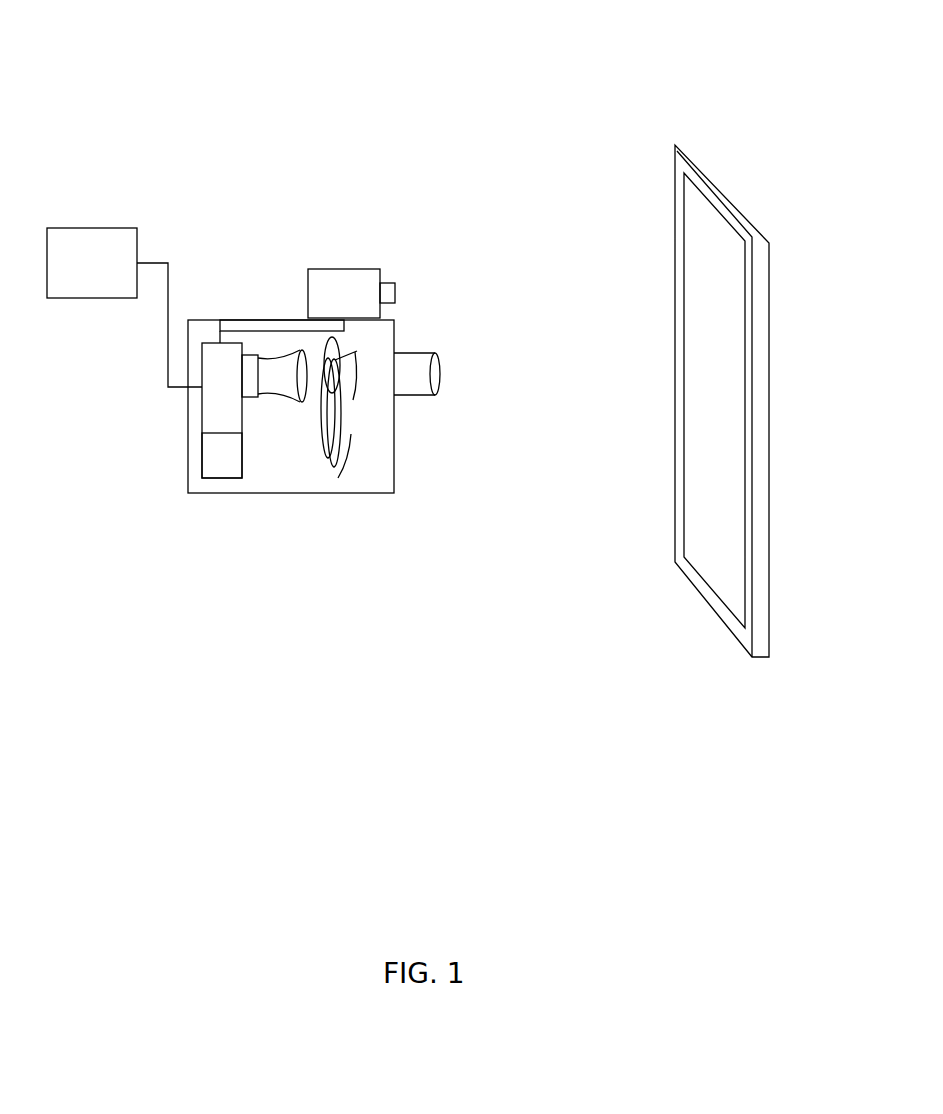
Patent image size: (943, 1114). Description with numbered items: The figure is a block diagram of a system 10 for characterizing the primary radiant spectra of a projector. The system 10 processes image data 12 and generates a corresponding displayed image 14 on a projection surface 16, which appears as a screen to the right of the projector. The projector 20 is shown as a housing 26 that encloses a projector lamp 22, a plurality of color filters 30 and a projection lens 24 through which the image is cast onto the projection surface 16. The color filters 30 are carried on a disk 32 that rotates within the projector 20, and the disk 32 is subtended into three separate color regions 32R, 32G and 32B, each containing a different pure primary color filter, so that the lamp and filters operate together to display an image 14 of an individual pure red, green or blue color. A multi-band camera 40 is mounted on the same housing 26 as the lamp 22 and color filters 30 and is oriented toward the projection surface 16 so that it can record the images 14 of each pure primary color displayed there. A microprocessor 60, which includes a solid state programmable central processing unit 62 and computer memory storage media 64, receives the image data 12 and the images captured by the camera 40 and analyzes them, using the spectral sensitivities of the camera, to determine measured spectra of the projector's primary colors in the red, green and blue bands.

The system for characterizing primary radiant spectra of a projector 10 is at (202, 90).
The image data 12 is at (82, 228).
The displayed image 14 is at (733, 262).
The projection surface 16 is at (682, 167).
The projector 20 is at (278, 573).
The projector lamp 22 is at (277, 367).
The projection lens 24 is at (438, 377).
The housing 26 is at (395, 475).
The color filters 30 is at (332, 488).
The disk 32 is at (352, 410).
The red color region 32R is at (333, 355).
The green color region 32G is at (326, 408).
The blue color region 32B is at (335, 446).
The multi-band camera 40 is at (347, 271).
The microprocessor 60 is at (188, 505).
The central processing unit 62 is at (204, 403).
The computer memory storage media 64 is at (204, 453).